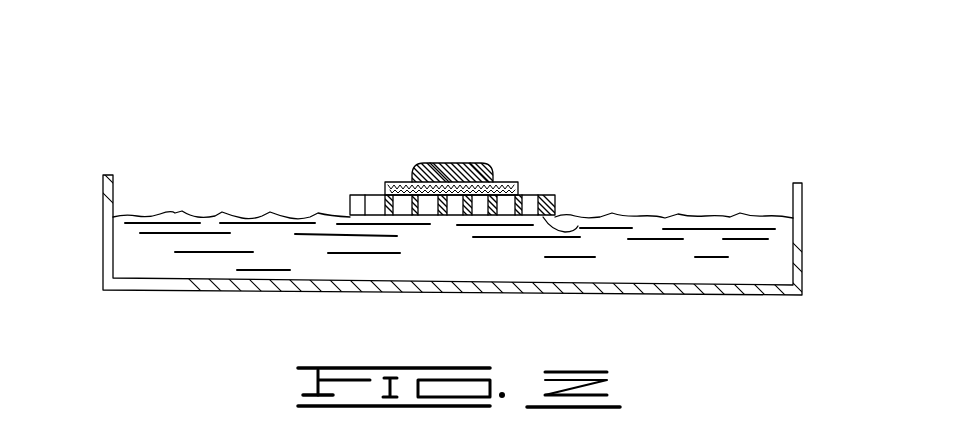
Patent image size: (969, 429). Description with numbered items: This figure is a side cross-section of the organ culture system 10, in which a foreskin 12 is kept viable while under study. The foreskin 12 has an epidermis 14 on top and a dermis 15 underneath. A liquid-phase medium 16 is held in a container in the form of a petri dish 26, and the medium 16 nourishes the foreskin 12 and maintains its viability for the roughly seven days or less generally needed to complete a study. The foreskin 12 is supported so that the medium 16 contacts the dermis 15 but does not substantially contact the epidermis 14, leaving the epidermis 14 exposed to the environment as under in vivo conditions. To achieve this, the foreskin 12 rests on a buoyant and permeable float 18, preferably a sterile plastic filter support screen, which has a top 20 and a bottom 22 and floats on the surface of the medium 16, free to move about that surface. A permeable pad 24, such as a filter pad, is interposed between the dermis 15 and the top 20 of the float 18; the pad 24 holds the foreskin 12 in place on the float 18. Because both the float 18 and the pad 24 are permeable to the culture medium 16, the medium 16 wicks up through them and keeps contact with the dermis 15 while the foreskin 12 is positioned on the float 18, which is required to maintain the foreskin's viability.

The organ culture system 10 is at (188, 157).
The foreskin 12 is at (478, 173).
The epidermis 14 is at (442, 163).
The dermis 15 is at (460, 167).
The medium 16 is at (190, 262).
The float 18 is at (348, 195).
The top 20 is at (365, 195).
The bottom 22 is at (578, 226).
The permeable pad 24 is at (512, 183).
The petri dish 26 is at (800, 220).